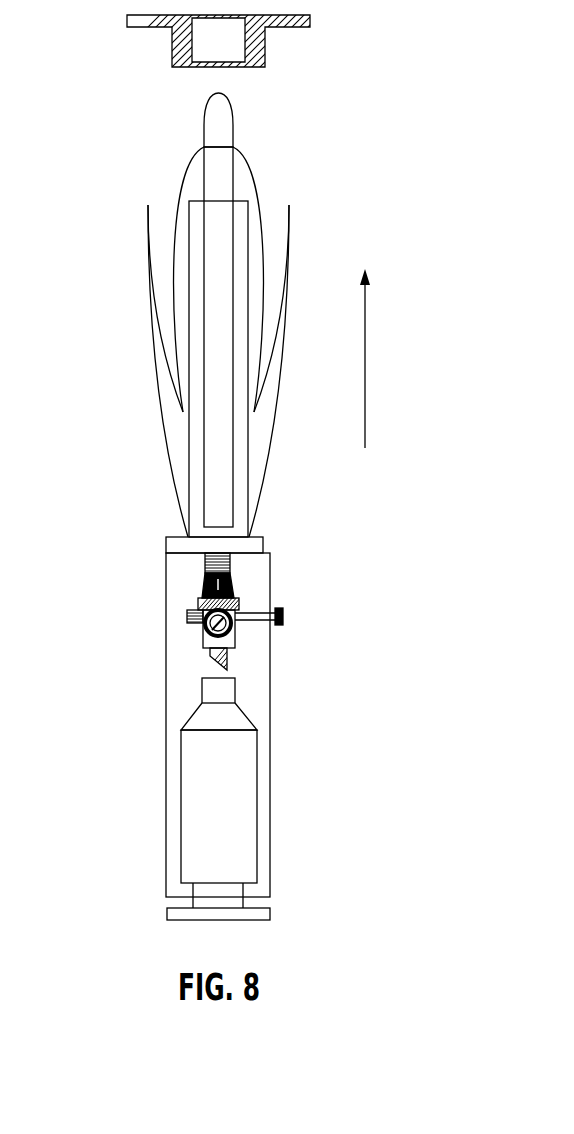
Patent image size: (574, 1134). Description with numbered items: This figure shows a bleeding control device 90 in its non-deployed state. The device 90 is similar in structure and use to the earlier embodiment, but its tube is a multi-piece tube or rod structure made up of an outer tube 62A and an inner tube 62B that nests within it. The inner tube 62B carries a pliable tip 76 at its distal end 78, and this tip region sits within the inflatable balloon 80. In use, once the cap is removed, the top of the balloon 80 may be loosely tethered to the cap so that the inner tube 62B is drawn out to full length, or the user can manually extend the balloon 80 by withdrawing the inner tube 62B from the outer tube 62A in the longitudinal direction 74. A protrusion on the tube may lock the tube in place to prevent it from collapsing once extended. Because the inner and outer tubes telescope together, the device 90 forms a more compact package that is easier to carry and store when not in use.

The bleeding control device 90 is at (108, 178).
The distal end 78 is at (173, 103).
The pliable tip 76 is at (204, 125).
The inner tube 62B is at (233, 173).
The inflatable balloon 80 is at (258, 210).
The outer tube 62A is at (247, 367).
The longitudinal direction 74 is at (365, 358).